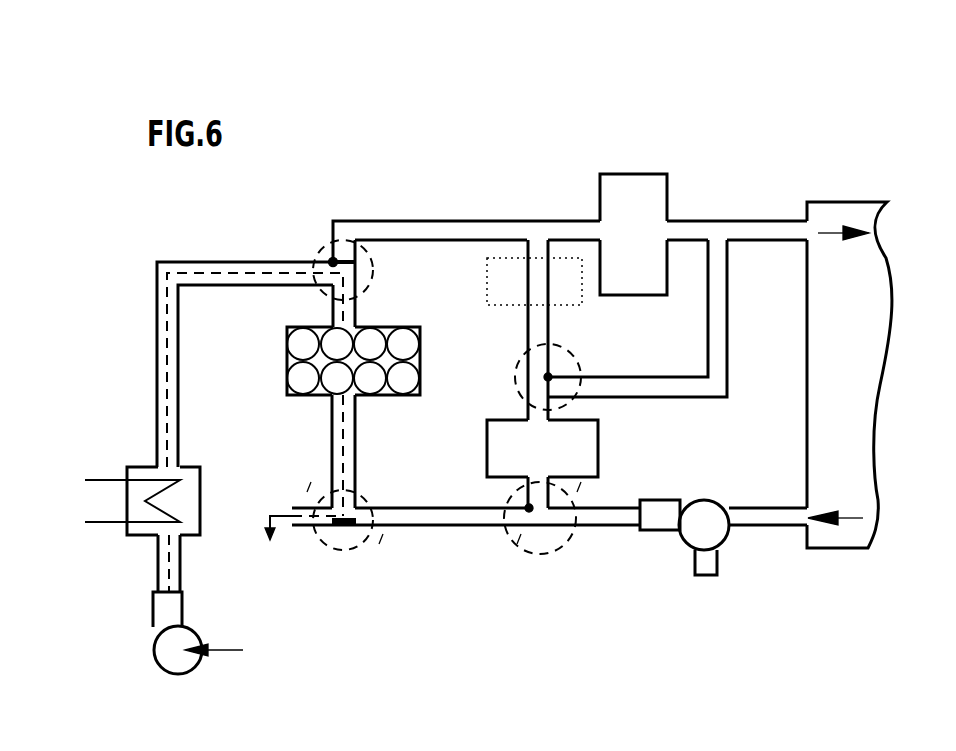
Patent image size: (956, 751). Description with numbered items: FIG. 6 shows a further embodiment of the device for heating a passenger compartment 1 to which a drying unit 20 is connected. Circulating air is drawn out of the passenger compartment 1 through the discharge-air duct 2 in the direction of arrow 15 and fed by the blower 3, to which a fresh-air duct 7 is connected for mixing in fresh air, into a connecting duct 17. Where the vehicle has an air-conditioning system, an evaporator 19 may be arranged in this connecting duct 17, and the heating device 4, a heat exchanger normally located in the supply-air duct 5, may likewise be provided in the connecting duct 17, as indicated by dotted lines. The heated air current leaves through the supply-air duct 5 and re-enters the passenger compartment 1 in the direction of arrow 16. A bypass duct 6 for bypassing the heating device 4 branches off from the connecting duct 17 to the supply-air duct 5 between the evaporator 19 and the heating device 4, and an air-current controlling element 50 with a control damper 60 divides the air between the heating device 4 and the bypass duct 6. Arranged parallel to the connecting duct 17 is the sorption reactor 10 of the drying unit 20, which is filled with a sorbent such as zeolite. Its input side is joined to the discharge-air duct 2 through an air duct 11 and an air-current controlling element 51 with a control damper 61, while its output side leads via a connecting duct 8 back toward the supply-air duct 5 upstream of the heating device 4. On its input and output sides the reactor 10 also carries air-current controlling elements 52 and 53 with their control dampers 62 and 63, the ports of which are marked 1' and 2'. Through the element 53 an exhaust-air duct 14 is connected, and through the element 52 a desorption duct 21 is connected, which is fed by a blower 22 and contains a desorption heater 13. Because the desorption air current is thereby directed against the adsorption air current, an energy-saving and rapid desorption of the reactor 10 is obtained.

The passenger compartment 1 is at (838, 375).
The discharge-air duct 2 is at (768, 494).
The blower 3 is at (711, 501).
The heating device 4 is at (600, 197).
The supply-air duct 5 is at (749, 221).
The bypass duct 6 is at (727, 353).
The fresh-air duct 7 is at (717, 565).
The connecting duct 8 is at (396, 221).
The sorption reactor 10 is at (400, 327).
The air duct 11 is at (416, 516).
The desorption heater 13 is at (141, 467).
The exhaust-air duct 14 is at (285, 508).
The arrow 15 is at (850, 511).
The arrow 16 is at (824, 238).
The connecting duct 17 is at (528, 334).
The evaporator 19 is at (487, 468).
The drying unit 20 is at (217, 248).
The desorption duct 21 is at (157, 353).
The blower 22 is at (153, 651).
The air-current controlling element 50 is at (549, 370).
The air-current controlling element 51 is at (578, 489).
The air-current controlling element 52 is at (330, 256).
The air-current controlling element 53 is at (346, 548).
The control damper 60 is at (560, 372).
The control damper 61 is at (546, 548).
The control damper 62 is at (343, 250).
The control damper 63 is at (338, 546).
The valve port 1' is at (440, 496).
The valve port 2' is at (441, 550).